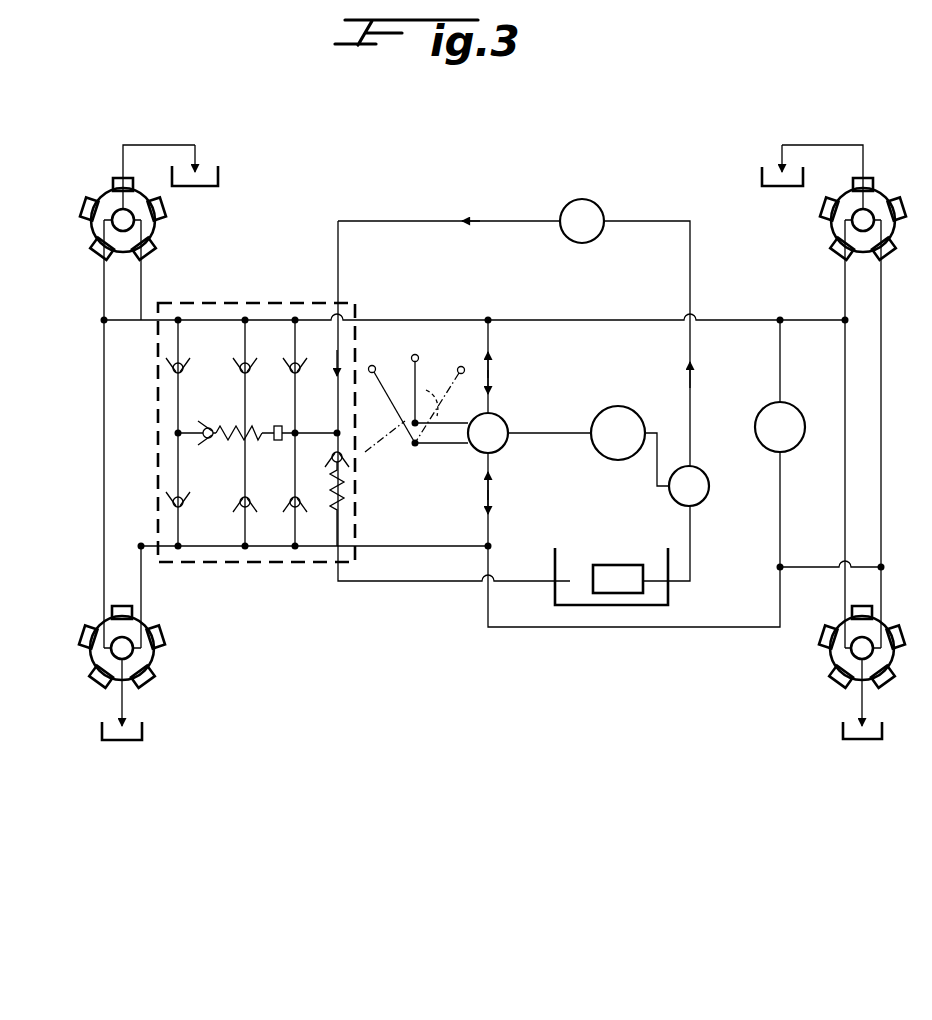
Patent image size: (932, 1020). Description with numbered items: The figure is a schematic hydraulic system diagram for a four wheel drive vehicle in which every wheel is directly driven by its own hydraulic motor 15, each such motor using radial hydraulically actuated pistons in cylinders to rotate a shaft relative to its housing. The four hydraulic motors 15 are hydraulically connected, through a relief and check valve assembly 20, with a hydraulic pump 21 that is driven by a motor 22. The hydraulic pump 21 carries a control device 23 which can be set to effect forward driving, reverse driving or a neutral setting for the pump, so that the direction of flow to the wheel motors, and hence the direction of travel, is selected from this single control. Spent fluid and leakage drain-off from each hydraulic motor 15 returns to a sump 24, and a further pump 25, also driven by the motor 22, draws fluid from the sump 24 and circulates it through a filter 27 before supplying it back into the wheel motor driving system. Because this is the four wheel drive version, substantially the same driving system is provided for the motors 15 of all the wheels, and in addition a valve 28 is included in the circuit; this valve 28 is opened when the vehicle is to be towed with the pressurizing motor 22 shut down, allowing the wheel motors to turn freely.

The hydraulic motor 15 is at (90, 231).
The relief and check valve assembly 20 is at (255, 302).
The hydraulic pump 21 is at (477, 449).
The motor 22 is at (604, 450).
The control device 23 is at (418, 398).
The sump 24 is at (200, 187).
The pump 25 is at (710, 494).
The filter 27 is at (600, 205).
The valve 28 is at (762, 444).